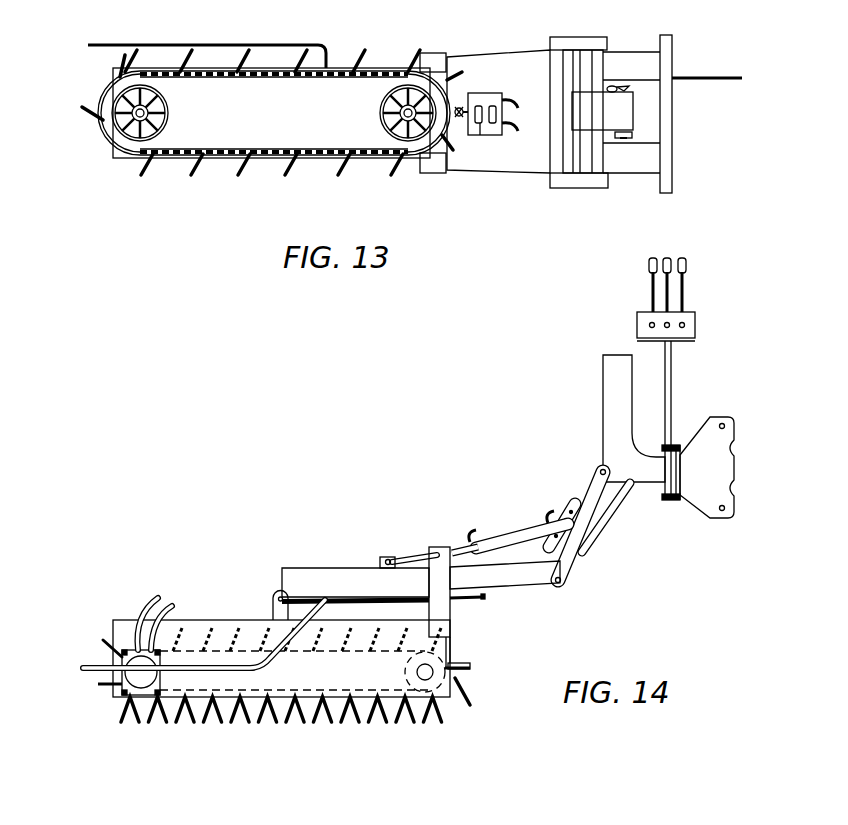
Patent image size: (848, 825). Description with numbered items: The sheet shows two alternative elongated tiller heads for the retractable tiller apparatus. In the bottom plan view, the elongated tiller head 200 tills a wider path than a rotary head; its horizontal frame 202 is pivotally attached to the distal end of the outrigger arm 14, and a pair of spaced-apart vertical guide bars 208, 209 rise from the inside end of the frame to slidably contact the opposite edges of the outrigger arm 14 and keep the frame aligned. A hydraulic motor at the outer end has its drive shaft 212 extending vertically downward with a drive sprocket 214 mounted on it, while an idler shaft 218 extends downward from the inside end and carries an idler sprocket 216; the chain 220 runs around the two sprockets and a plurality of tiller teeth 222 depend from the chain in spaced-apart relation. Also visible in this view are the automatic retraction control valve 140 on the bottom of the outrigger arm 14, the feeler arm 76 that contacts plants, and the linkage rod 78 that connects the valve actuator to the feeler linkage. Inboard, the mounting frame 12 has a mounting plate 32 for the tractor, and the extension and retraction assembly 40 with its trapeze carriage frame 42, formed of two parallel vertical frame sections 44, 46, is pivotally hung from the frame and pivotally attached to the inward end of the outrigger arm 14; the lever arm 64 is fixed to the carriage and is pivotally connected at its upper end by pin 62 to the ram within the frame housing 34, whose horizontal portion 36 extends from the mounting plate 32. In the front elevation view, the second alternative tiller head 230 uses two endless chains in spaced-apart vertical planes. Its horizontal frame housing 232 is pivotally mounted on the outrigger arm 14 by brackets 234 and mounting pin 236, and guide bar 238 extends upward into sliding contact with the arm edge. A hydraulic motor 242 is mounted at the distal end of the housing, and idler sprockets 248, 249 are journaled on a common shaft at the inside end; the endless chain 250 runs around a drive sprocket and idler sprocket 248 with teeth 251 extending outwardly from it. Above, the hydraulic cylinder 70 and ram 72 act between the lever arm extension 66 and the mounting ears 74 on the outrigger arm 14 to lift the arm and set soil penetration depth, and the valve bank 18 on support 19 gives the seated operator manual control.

In FIG. 13, the mounting frame 12 is at (639, 180).
In FIG. 13, the outrigger arm 14 is at (500, 55).
In FIG. 14, the outrigger arm 14 is at (307, 568).
In FIG. 14, the valve bank 18 is at (700, 312).
In FIG. 14, the support 19 is at (672, 372).
In FIG. 13, the mounting plate 32 is at (705, 77).
In FIG. 14, the mounting plate 32 is at (734, 470).
In FIG. 14, the frame housing 34 is at (598, 394).
In FIG. 13, the horizontal portion 36 is at (630, 52).
In FIG. 13, the extension and retraction assembly 40 is at (553, 194).
In FIG. 14, the extension and retraction assembly 40 is at (614, 535).
In FIG. 13, the trapeze carriage frame 42 is at (581, 17).
In FIG. 14, the trapeze carriage frame 42 is at (578, 565).
In FIG. 13, the vertical frame section 44 is at (582, 43).
In FIG. 13, the vertical frame section 46 is at (575, 188).
In FIG. 13, the pin 62 is at (617, 86).
In FIG. 13, the lever arm 64 is at (614, 119).
In FIG. 14, the lever arm 64 is at (623, 511).
In FIG. 14, the extension 66 is at (566, 504).
In FIG. 14, the hydraulic cylinder 70 is at (518, 539).
In FIG. 14, the ram 72 is at (425, 556).
In FIG. 14, the mounting ears 74 is at (382, 557).
In FIG. 13, the feeler arm 76 is at (184, 46).
In FIG. 14, the feeler arm 76 is at (100, 667).
In FIG. 13, the linkage rod 78 is at (468, 98).
In FIG. 13, the automatic retraction control valve 140 is at (480, 135).
In FIG. 14, the automatic retraction control valve 140 is at (478, 600).
In FIG. 13, the elongated tiller head 200 is at (98, 91).
In FIG. 13, the horizontal frame 202 is at (120, 158).
In FIG. 13, the vertical guide bar 208 is at (436, 53).
In FIG. 13, the vertical guide bar 209 is at (433, 175).
In FIG. 13, the drive shaft 212 is at (148, 118).
In FIG. 13, the drive sprocket 214 is at (168, 97).
In FIG. 13, the idler sprocket 216 is at (379, 97).
In FIG. 13, the idler shaft 218 is at (402, 115).
In FIG. 13, the chain 220 is at (212, 166).
In FIG. 13, the tiller teeth 222 is at (245, 172).
In FIG. 14, the elongated tiller head 230 is at (119, 614).
In FIG. 14, the horizontal frame housing 232 is at (215, 601).
In FIG. 14, the brackets 234 is at (273, 612).
In FIG. 14, the mounting pin 236 is at (276, 592).
In FIG. 14, the guide bar 238 is at (452, 630).
In FIG. 14, the hydraulic motor 242 is at (125, 698).
In FIG. 14, the idler sprocket 248 is at (447, 675).
In FIG. 14, the idler sprocket 249 is at (456, 700).
In FIG. 14, the endless chain 250 is at (247, 716).
In FIG. 14, the teeth 251 is at (198, 718).